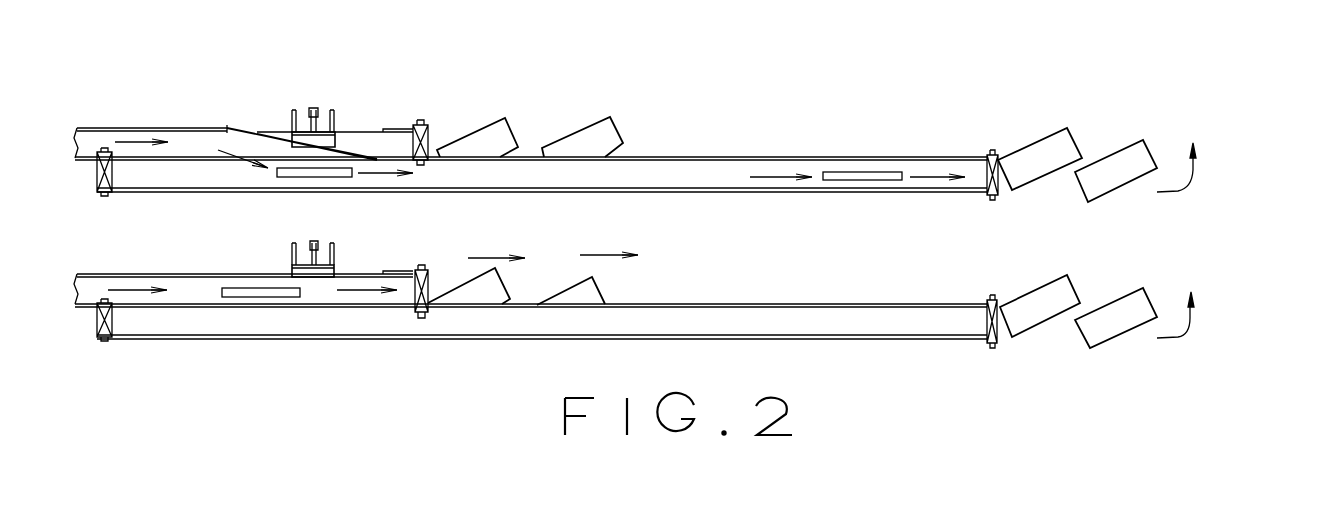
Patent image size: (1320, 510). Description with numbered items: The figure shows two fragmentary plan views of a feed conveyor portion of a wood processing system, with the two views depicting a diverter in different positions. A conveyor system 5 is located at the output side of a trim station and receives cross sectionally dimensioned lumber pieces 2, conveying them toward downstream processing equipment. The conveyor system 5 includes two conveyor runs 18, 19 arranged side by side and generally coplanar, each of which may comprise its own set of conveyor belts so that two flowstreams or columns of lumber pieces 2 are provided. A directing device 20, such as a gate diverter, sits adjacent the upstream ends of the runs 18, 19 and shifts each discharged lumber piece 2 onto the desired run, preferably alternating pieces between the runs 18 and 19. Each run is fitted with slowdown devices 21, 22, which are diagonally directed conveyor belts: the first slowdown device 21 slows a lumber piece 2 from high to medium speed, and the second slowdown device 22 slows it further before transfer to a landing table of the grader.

The lumber pieces 2 is at (307, 178).
The conveyor system 5 is at (161, 122).
The conveyor run 18 is at (92, 143).
The conveyor run 19 is at (138, 175).
The directing device 20 is at (348, 156).
The first slowdown device 21 is at (475, 132).
The second slowdown device 22 is at (570, 132).